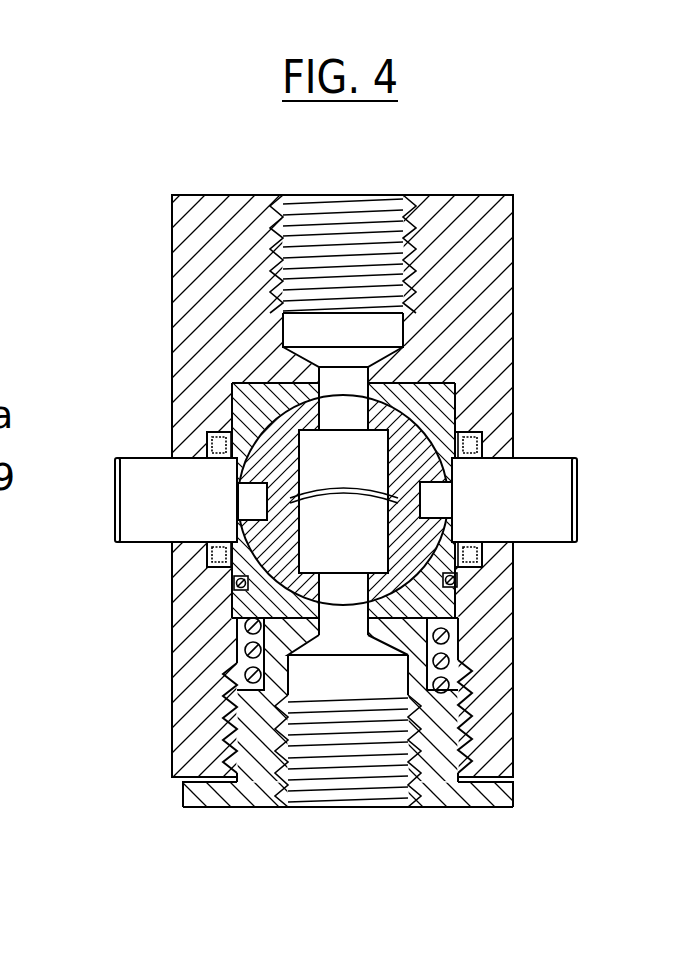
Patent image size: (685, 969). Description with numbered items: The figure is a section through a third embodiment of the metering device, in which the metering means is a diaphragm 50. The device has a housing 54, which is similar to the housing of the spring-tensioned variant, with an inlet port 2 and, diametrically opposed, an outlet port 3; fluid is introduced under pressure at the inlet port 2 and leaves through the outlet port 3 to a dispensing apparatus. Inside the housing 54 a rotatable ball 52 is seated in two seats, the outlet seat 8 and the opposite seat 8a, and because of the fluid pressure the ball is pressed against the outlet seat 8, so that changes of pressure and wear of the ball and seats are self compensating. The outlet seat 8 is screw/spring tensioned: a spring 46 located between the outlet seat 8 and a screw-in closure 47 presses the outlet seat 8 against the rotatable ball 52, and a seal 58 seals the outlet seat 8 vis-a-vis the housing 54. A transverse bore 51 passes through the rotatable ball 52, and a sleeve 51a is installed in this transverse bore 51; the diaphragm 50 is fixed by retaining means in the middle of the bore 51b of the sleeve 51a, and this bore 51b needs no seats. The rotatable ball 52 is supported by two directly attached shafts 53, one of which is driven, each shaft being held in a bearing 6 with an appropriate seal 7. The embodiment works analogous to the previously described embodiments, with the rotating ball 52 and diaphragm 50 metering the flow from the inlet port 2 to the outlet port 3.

The inlet port 2 is at (312, 242).
The outlet port 3 is at (322, 785).
The bearing 6 is at (423, 553).
The seal 7 is at (485, 443).
The outlet seat 8 is at (235, 618).
The seat 8a is at (440, 392).
The spring 46 is at (457, 690).
The screw-in closure 47 is at (442, 770).
The diaphragm 50 is at (337, 485).
The transverse bore 51 is at (455, 622).
The sleeve 51a is at (312, 408).
The bore of sleeve 51b is at (372, 533).
The rotatable ball 52 is at (278, 538).
The shafts 53 is at (143, 505).
The housing 54 is at (529, 244).
The seal 58 is at (236, 590).